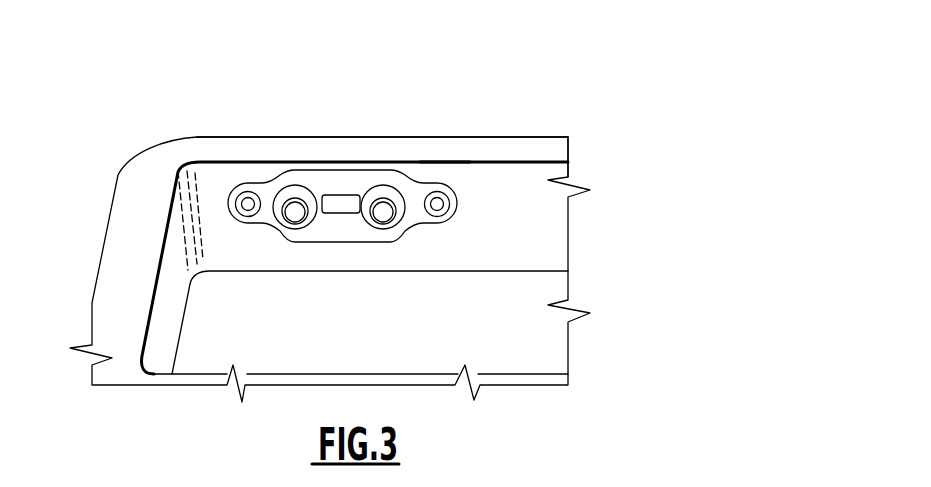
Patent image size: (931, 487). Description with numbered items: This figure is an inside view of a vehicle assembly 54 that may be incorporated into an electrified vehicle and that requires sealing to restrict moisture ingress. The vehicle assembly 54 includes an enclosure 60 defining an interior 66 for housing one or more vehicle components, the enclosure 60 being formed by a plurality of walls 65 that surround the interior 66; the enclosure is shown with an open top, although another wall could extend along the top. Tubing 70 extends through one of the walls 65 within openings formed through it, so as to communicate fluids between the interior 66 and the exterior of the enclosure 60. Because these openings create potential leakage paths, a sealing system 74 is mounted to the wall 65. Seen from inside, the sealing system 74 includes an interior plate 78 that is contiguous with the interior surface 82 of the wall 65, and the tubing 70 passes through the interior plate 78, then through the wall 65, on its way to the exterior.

The vehicle assembly 54 is at (487, 101).
The enclosure 60 is at (567, 124).
The wall 65 is at (167, 224).
The interior 66 is at (520, 198).
The tubing 70 is at (382, 197).
The sealing system 74 is at (432, 166).
The interior plate 78 is at (397, 177).
The interior surface 82 is at (501, 205).